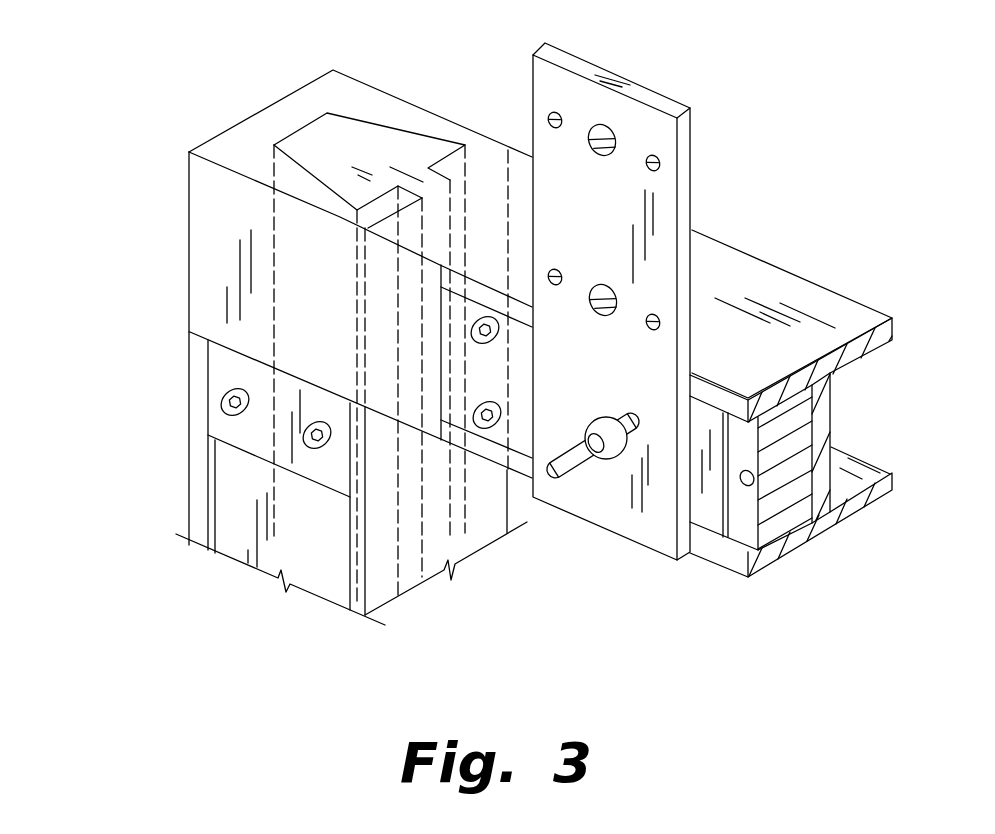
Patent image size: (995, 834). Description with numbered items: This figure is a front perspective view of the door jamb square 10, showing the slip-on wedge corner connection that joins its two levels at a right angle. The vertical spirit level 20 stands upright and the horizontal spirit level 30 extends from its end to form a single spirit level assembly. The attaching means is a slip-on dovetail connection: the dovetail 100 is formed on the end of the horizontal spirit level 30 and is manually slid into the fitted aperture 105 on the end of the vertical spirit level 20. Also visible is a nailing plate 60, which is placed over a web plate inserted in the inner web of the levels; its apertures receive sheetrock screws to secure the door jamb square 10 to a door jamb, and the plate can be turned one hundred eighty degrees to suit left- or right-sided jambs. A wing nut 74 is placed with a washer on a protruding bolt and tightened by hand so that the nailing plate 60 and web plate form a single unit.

The door jamb square 10 is at (118, 92).
The fitted aperture 105 is at (303, 97).
The dovetail 100 is at (378, 159).
The vertical spirit level 20 is at (340, 539).
The nailing plate 60 is at (699, 156).
The wing nut 74 is at (582, 466).
The horizontal spirit level 30 is at (755, 292).